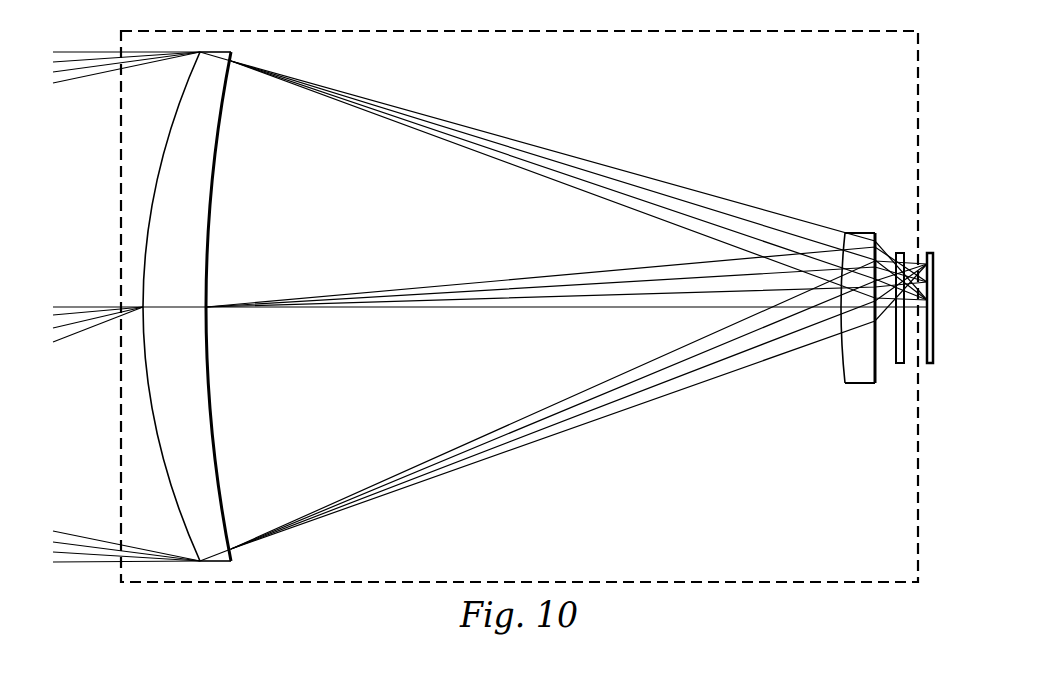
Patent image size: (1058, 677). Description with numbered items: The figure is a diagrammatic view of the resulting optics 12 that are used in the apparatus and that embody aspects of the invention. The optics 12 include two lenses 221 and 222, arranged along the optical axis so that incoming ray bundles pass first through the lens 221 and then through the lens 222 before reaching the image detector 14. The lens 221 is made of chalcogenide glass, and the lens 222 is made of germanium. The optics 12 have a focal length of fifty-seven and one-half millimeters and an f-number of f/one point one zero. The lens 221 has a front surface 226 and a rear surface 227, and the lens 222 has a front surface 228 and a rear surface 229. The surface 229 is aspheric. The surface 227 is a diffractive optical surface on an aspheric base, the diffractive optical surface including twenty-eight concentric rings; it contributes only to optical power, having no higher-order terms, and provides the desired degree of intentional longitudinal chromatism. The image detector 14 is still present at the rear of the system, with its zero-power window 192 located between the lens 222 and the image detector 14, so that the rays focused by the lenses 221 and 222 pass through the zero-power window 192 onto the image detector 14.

The optics 12 is at (776, 113).
The image detector 14 is at (930, 367).
The zero-power window 192 is at (900, 252).
The lens 221 is at (209, 306).
The lens 222 is at (840, 349).
The front surface 226 is at (164, 465).
The rear surface 227 is at (208, 416).
The front surface 228 is at (843, 360).
The rear surface 229 is at (877, 371).